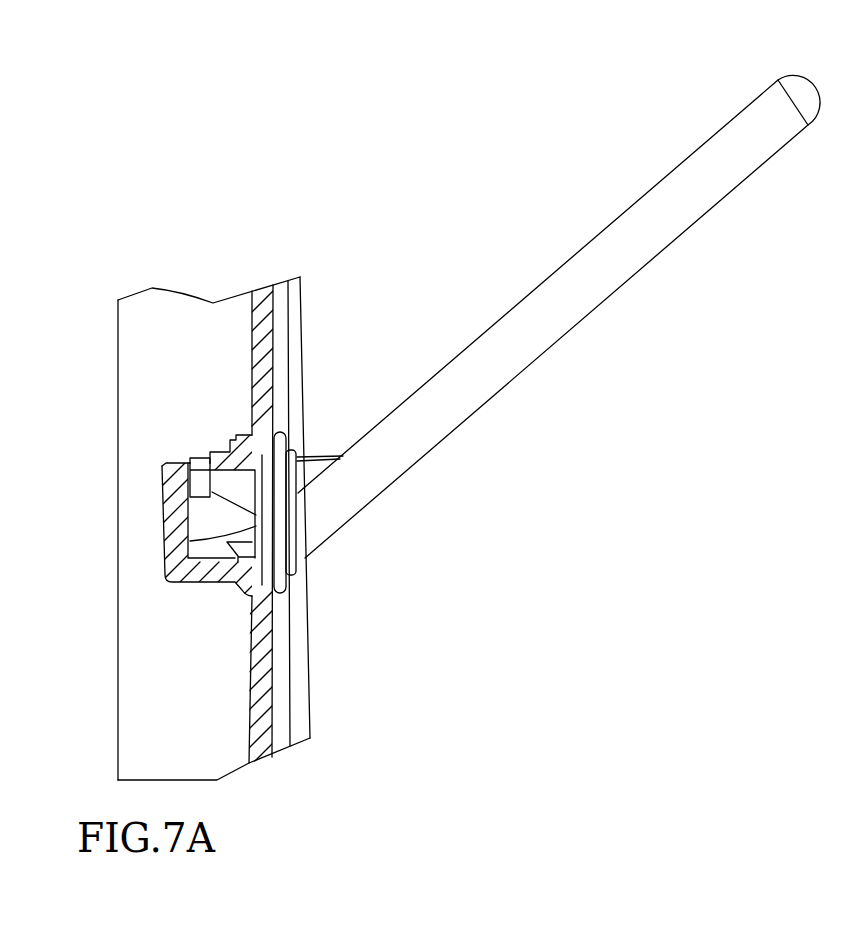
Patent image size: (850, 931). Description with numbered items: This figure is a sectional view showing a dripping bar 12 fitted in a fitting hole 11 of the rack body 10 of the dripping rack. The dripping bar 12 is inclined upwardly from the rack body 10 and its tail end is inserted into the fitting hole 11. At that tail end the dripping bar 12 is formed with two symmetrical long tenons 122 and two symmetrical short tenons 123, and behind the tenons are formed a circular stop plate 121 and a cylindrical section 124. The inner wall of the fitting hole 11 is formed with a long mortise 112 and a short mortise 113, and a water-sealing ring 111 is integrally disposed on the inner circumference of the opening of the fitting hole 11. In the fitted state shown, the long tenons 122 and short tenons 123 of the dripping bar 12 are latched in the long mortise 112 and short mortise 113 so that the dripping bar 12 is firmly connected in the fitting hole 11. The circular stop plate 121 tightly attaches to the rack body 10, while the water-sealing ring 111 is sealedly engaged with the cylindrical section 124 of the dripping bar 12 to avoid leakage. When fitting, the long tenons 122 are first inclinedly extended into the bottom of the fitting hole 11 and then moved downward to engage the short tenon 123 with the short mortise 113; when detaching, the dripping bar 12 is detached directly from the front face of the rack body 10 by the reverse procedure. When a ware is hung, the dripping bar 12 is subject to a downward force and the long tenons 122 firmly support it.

The rack body 10 is at (318, 650).
The fitting hole 11 is at (162, 466).
The water-sealing ring 111 is at (188, 541).
The long mortise 112 is at (203, 458).
The short mortise 113 is at (240, 562).
The dripping bar 12 is at (471, 418).
The circular stop plate 121 is at (288, 445).
The long tenon 122 is at (190, 490).
The short tenon 123 is at (165, 577).
The cylindrical section 124 is at (262, 432).